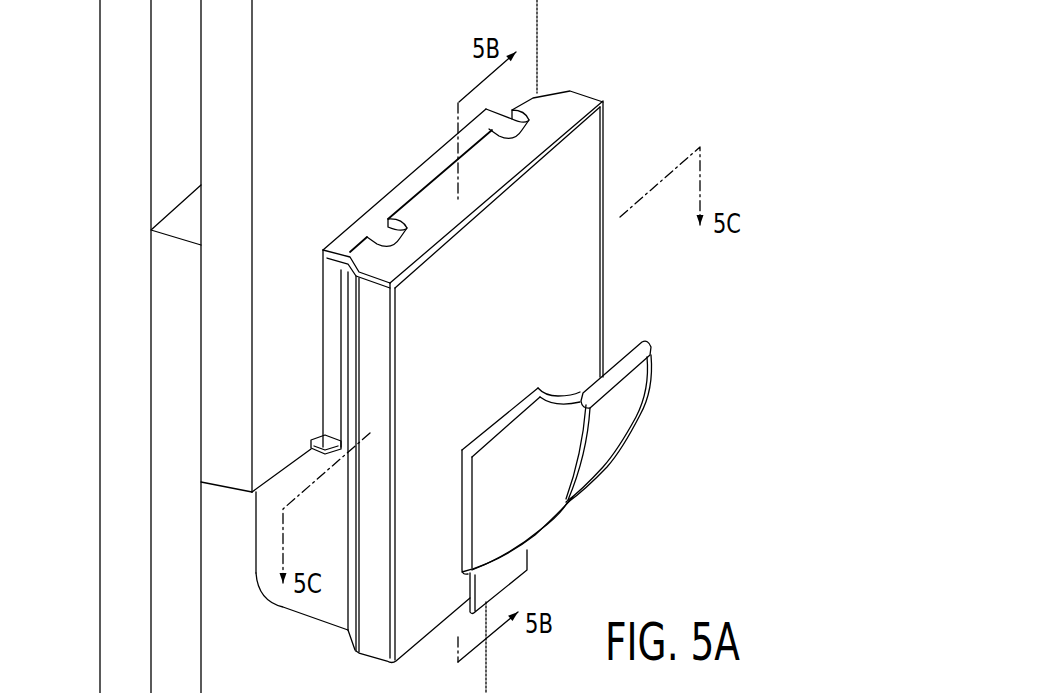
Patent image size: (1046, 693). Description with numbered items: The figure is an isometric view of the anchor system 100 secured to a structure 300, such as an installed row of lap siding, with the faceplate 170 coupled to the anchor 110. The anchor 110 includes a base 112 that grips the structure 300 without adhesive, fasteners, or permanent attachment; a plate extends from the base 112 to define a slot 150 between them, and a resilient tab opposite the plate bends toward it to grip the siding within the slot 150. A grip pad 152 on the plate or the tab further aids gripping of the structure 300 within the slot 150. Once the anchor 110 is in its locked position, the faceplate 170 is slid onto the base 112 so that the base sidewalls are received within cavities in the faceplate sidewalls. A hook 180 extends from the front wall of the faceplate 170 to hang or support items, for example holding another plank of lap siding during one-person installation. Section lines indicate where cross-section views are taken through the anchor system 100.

The anchor system 100 is at (487, 333).
The anchor 110 is at (423, 172).
The base 112 is at (318, 605).
The slot 150 is at (318, 438).
The grip pad 152 is at (328, 330).
The faceplate 170 is at (593, 173).
The hook 180 is at (650, 344).
The structure 300 is at (217, 377).